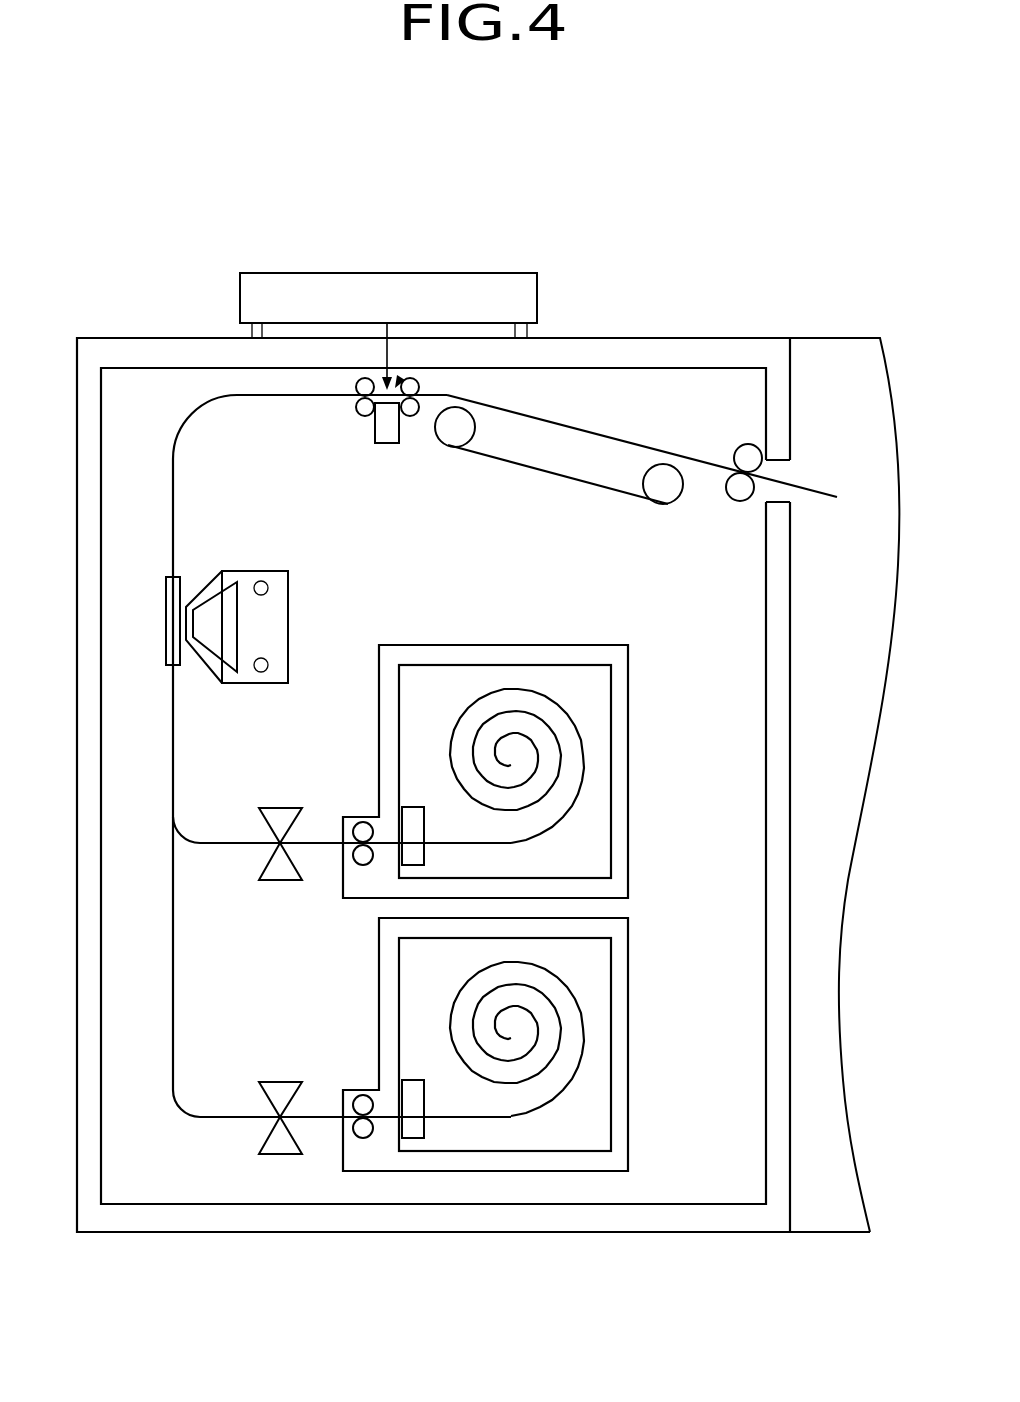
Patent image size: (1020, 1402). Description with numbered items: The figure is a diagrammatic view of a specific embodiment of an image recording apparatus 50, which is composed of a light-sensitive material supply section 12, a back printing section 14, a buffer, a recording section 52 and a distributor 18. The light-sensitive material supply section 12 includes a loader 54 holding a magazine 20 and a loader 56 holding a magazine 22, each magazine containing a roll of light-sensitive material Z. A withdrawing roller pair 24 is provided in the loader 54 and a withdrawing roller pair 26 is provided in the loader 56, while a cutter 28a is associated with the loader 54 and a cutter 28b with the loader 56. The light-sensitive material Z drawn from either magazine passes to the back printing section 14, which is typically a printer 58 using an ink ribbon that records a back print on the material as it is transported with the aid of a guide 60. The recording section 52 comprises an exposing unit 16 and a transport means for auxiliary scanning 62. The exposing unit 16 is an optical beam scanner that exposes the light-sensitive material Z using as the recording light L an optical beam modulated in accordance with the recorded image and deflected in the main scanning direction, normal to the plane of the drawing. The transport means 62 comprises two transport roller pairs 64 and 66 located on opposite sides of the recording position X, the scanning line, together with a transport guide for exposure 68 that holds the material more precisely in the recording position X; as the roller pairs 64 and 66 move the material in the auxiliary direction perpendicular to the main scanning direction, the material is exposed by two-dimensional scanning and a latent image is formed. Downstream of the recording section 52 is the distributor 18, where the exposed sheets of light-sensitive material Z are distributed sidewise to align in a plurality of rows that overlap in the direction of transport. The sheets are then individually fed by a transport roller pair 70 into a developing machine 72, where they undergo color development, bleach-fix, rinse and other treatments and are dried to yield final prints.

The image recording apparatus 50 is at (764, 190).
The light-sensitive material supply section 12 is at (715, 697).
The developing machine 72 is at (836, 365).
The exposing unit 16 is at (372, 290).
The recording light L is at (386, 375).
The recording position X is at (394, 382).
The back printing section 14 is at (262, 546).
The recording section 52 is at (422, 502).
The transport means for auxiliary scanning 62 is at (341, 448).
The transport roller pair 64 is at (357, 408).
The transport guide for exposure 68 is at (390, 446).
The distributor 18 is at (636, 491).
The transport roller pair 66 is at (440, 442).
The transport roller pair 70 is at (740, 500).
The printer 58 is at (290, 608).
The guide 60 is at (166, 652).
The cutter 28a is at (280, 878).
The cutter 28b is at (283, 1080).
The magazine 20 is at (507, 838).
The loader 54 is at (628, 790).
The withdrawing roller pair 24 is at (358, 820).
The light-sensitive material Z is at (597, 815).
The magazine 22 is at (514, 1044).
The loader 56 is at (611, 1060).
The withdrawing roller pair 26 is at (362, 1095).